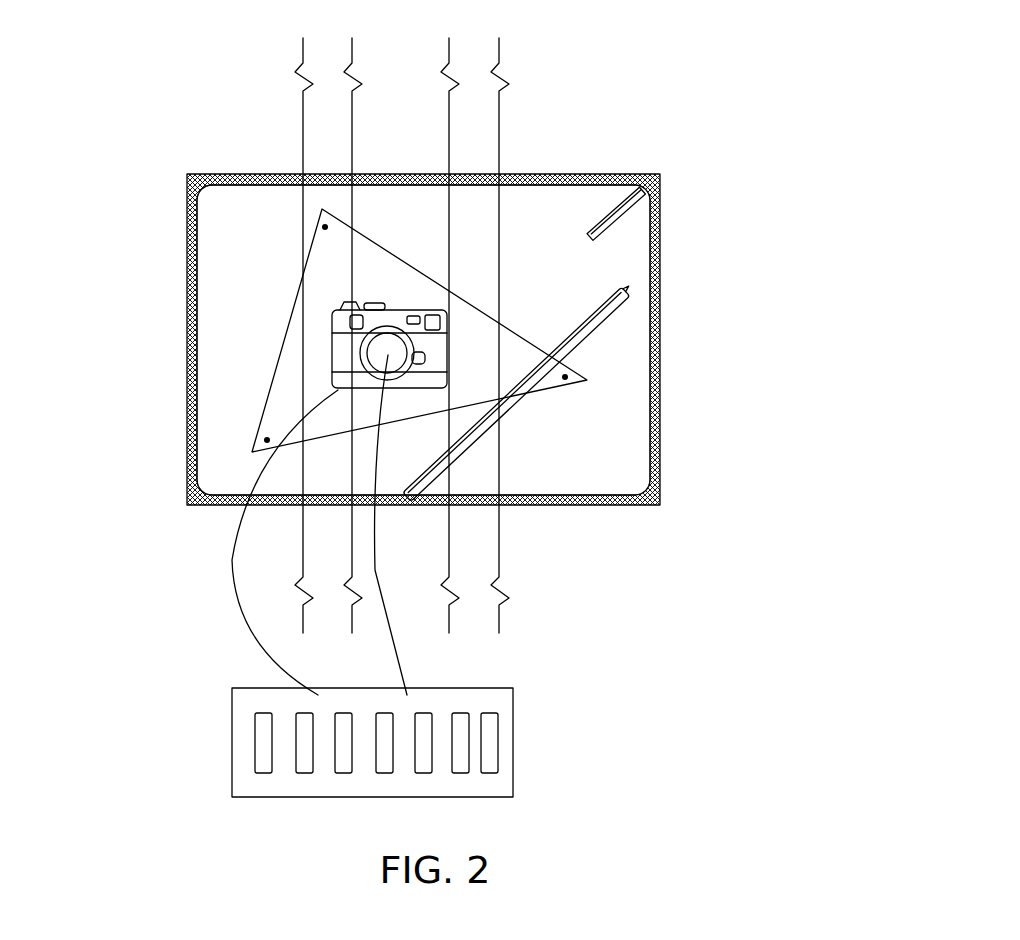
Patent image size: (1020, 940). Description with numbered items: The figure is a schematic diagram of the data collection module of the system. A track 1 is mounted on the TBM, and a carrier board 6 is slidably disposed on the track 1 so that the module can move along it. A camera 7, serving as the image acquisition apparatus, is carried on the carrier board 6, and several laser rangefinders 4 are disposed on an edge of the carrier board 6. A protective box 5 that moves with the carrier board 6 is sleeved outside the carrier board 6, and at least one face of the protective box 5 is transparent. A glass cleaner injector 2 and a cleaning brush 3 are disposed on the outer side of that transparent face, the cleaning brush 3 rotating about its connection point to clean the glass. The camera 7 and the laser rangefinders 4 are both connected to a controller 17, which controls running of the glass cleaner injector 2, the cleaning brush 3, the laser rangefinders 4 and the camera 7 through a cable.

The track 1 is at (470, 140).
The glass cleaner injector 2 is at (655, 180).
The cleaning brush 3 is at (660, 265).
The laser rangefinder 4 is at (322, 222).
The protective box 5 is at (568, 503).
The carrier board 6 is at (305, 325).
The camera 7 is at (340, 385).
The controller 17 is at (482, 715).